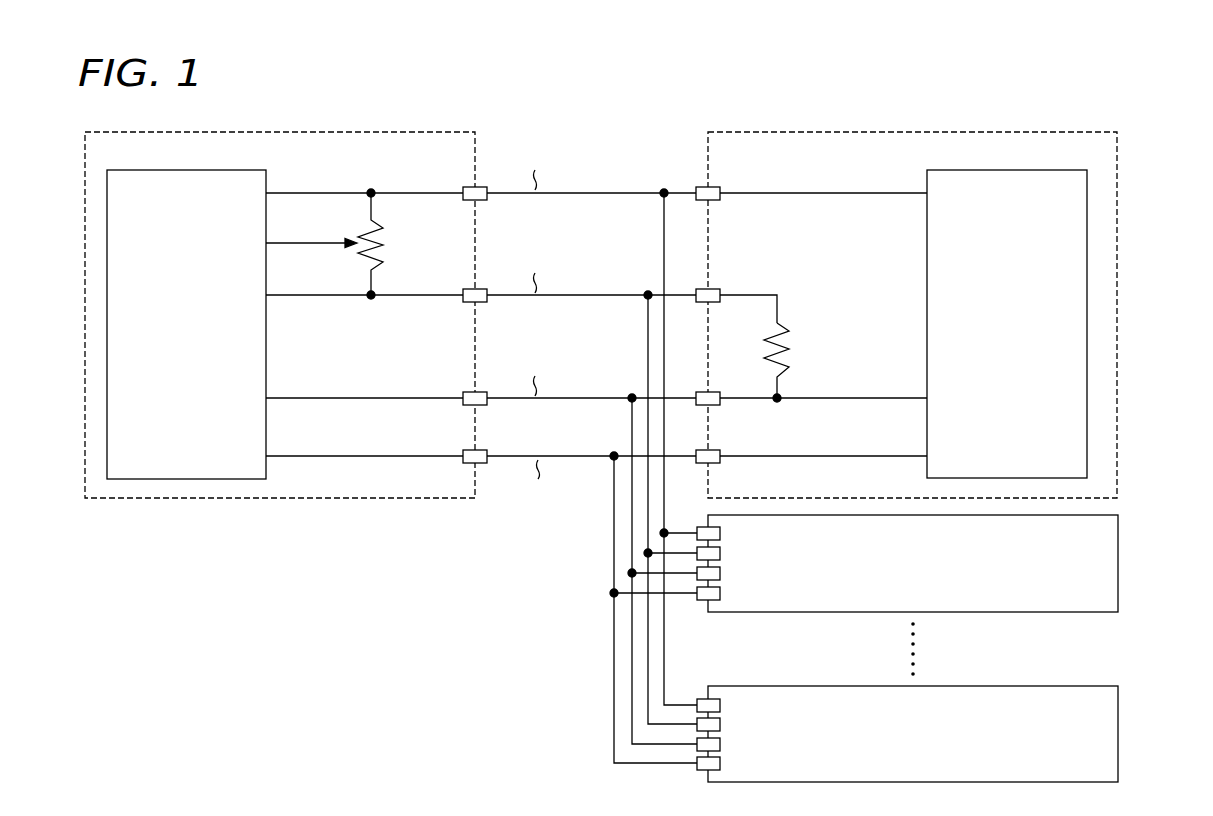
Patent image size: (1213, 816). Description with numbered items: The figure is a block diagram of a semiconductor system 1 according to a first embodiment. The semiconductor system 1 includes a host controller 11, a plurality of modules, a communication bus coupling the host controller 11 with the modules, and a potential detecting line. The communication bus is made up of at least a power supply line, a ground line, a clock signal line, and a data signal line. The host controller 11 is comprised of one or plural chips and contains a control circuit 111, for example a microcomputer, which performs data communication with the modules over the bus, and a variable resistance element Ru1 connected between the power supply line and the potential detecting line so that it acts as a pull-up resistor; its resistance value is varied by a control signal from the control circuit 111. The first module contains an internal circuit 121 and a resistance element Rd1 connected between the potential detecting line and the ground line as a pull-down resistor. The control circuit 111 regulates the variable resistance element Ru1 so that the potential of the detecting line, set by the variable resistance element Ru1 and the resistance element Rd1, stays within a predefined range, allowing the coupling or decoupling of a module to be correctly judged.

The semiconductor system 1 is at (609, 104).
The host controller 11 is at (404, 131).
The control circuit 111 is at (180, 170).
The variable resistance element Ru1 is at (386, 249).
The internal circuit 121 is at (980, 170).
The resistance element Rd1 is at (790, 355).